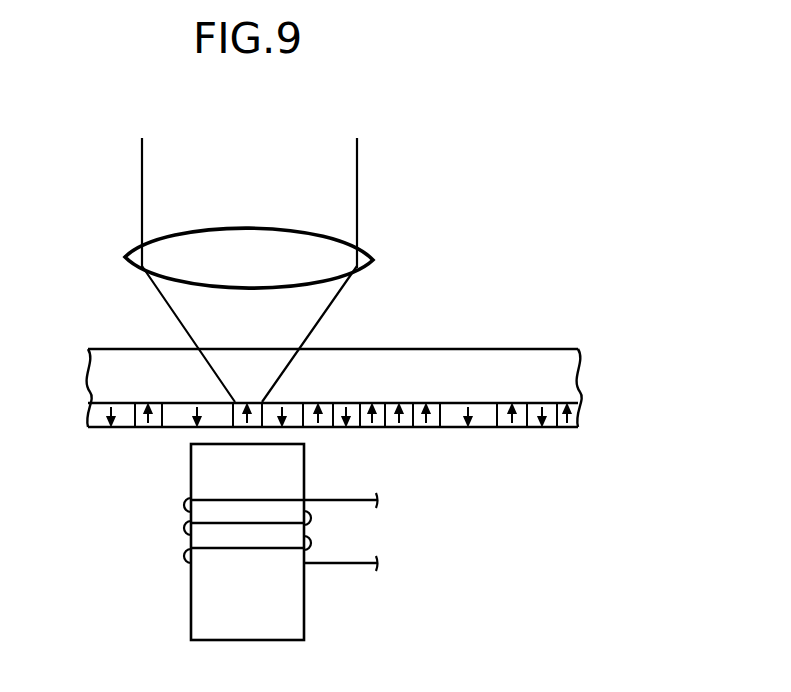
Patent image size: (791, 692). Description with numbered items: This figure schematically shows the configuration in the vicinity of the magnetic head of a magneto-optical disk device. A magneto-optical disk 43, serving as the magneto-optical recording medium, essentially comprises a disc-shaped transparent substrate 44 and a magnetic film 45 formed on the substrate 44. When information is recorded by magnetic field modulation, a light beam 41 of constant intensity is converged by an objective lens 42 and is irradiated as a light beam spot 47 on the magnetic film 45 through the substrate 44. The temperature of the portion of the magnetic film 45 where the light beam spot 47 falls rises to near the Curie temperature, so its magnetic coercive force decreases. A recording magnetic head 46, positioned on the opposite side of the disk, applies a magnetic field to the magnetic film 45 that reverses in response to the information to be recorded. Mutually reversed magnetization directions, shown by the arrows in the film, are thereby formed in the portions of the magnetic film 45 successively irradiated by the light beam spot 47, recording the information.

The light beam 41 is at (338, 173).
The objective lens 42 is at (363, 258).
The magneto-optical disk 43 is at (376, 324).
The transparent substrate 44 is at (535, 368).
The magnetic film 45 is at (582, 415).
The recording magnetic head 46 is at (182, 472).
The light beam spot 47 is at (247, 402).